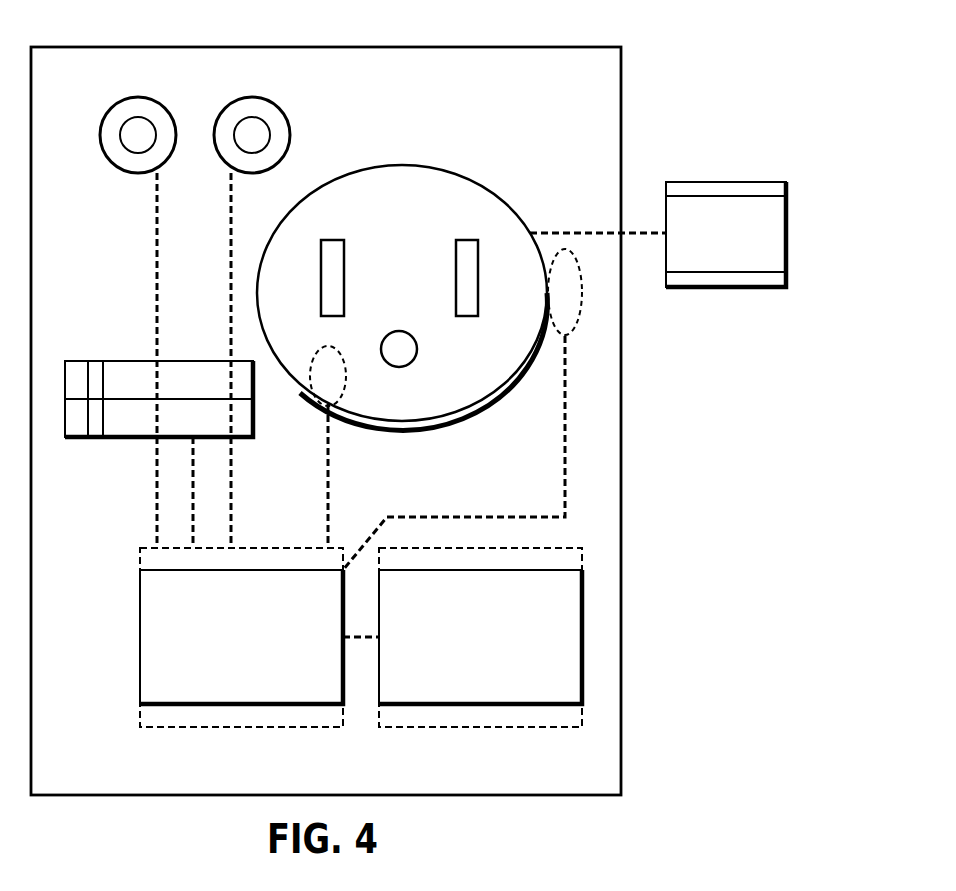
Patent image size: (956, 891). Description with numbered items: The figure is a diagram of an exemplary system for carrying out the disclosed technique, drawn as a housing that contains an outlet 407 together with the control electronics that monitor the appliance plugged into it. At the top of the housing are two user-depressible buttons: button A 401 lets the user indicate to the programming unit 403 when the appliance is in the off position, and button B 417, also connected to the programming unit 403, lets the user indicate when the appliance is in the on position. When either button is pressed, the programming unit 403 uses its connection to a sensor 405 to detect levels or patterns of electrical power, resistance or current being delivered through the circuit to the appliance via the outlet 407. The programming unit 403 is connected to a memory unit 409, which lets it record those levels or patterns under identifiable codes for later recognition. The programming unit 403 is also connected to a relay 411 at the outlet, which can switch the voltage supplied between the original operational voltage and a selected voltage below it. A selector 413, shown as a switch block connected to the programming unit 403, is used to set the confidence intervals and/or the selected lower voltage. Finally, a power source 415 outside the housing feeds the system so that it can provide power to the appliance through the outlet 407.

The button A 401 is at (100, 135).
The button B 417 is at (290, 135).
The outlet 407 is at (400, 165).
The relay 411 is at (346, 385).
The sensor 405 is at (580, 320).
The power source 415 is at (726, 181).
The selector 413 is at (114, 440).
The programming unit 403 is at (239, 729).
The memory unit 409 is at (477, 729).